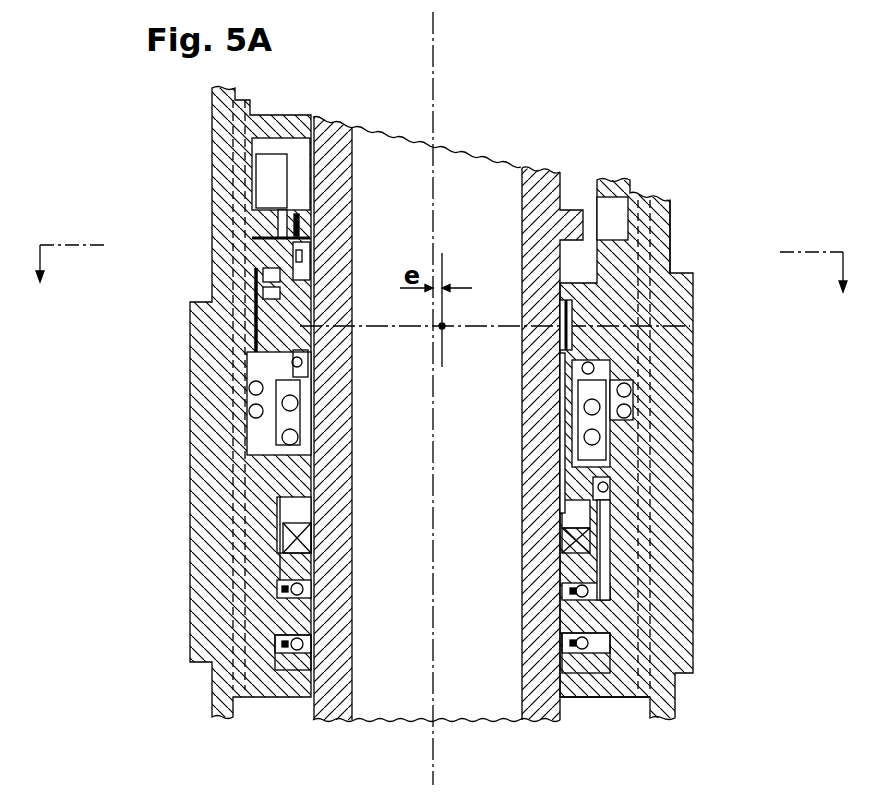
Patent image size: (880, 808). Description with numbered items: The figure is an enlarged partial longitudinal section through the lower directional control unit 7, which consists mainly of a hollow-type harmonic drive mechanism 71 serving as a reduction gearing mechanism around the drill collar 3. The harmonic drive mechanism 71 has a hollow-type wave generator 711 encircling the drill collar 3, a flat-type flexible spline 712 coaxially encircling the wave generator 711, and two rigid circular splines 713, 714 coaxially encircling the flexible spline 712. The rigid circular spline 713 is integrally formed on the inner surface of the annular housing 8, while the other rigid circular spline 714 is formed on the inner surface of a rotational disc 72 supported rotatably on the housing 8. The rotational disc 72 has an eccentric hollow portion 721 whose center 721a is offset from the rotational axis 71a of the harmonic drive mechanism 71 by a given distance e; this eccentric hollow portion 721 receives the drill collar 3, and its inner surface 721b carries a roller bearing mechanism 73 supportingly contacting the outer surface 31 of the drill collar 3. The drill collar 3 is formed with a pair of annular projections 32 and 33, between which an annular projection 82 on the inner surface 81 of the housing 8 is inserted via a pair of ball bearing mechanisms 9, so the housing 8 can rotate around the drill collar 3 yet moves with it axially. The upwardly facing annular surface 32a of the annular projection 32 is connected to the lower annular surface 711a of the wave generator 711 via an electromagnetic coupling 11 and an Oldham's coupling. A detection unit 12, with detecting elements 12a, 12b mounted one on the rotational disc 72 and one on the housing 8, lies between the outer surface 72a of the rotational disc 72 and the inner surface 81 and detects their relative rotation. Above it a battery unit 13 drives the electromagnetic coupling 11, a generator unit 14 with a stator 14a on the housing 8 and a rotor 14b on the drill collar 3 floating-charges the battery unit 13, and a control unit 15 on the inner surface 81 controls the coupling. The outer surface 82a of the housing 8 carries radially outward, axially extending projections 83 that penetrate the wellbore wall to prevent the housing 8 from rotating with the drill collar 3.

The drill collar 3 is at (525, 452).
The outer surface of the drill collar 31 is at (560, 408).
The annular projection 32 is at (690, 608).
The annular surface 32a is at (575, 528).
The annular projection 33 is at (693, 680).
The lower directional control unit 7 is at (722, 210).
The harmonic drive mechanism of the hollow type 71 is at (186, 322).
The rotational axis 71a is at (432, 185).
The rotational disc 72 is at (690, 322).
The outer surface of the rotational disc 72a is at (285, 347).
The roller bearing mechanism 73 is at (690, 382).
The eccentric hollow portion 721 is at (563, 302).
The center of the eccentric hollow portion 721a is at (442, 328).
The inner surface of the eccentric hollow portion 721b is at (563, 348).
The hollow-type wave generator 711 is at (282, 470).
The lower annular surface of the wave generator 711a is at (605, 487).
The flexible spline of the flat type 712 is at (282, 437).
The rigid circular spline 713 is at (282, 403).
The rigid circular spline 714 is at (250, 388).
The annular housing 8 is at (190, 548).
The inner surface of the housing 81 is at (690, 550).
The annular projection of the housing 82 is at (690, 640).
The outer surface of the housing 82a is at (672, 272).
The projections 83 is at (200, 350).
The ball bearing mechanism 9 is at (565, 645).
The electromagnetic coupling 11 is at (690, 582).
The detection unit 12 is at (134, 254).
The detecting element 12a is at (262, 270).
The detecting element 12b is at (262, 292).
The battery unit 13 is at (262, 248).
The generator unit 14 is at (134, 174).
The stator 14a is at (262, 225).
The rotor 14b is at (288, 205).
The control unit 15 is at (262, 165).